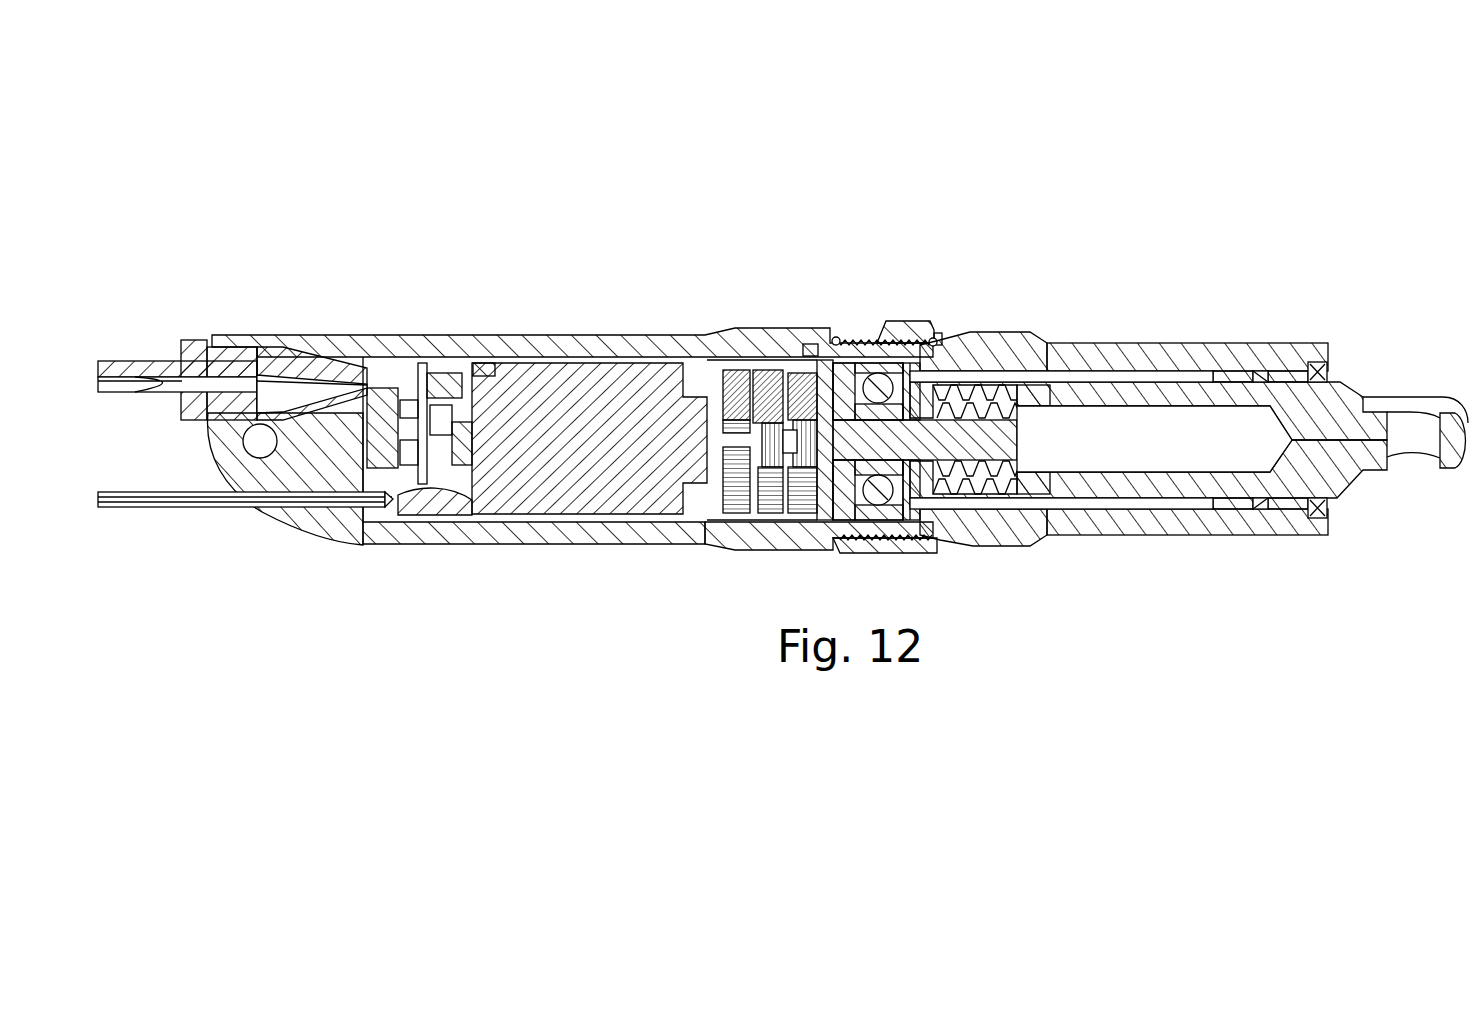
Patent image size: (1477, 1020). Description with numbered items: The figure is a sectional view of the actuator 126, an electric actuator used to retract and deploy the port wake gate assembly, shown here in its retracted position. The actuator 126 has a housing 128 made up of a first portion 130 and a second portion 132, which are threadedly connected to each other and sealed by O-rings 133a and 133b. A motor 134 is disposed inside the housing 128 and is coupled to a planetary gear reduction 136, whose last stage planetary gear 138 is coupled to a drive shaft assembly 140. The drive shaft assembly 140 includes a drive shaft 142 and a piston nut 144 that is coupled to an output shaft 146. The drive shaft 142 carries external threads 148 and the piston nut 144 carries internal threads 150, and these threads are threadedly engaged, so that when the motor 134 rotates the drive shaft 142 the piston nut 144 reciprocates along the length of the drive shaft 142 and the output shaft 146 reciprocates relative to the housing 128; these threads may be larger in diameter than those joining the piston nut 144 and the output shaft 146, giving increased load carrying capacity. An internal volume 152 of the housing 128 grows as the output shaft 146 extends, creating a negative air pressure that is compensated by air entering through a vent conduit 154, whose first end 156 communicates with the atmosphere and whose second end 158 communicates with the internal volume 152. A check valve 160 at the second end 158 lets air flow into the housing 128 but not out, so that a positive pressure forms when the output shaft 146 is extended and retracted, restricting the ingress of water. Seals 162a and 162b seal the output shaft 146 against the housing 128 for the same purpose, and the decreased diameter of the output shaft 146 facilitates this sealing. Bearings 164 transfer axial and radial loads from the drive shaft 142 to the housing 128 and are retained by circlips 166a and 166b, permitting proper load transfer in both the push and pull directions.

The actuator 126 is at (496, 180).
The housing 128 is at (905, 304).
The first portion of the housing 130 is at (677, 335).
The second portion of the housing 132 is at (1027, 333).
The O-ring 133a is at (812, 335).
The O-ring 133b is at (946, 337).
The motor 134 is at (570, 390).
The planetary gear reduction 136 is at (708, 547).
The last stage planetary gear 138 is at (744, 508).
The drive shaft assembly 140 is at (1072, 512).
The drive shaft 142 is at (958, 500).
The piston nut 144 is at (990, 505).
The output shaft 146 is at (1130, 505).
The external threads 148 is at (1042, 412).
The internal threads 150 is at (1022, 408).
The internal volume 152 is at (631, 541).
The vent conduit 154 is at (240, 509).
The first end 156 is at (103, 509).
The second end 158 is at (408, 508).
The check valve 160 is at (365, 523).
The seal 162a is at (1258, 345).
The seal 162b is at (1322, 343).
The bearings 164 is at (875, 333).
The circlip 166a is at (787, 337).
The circlip 166b is at (958, 338).